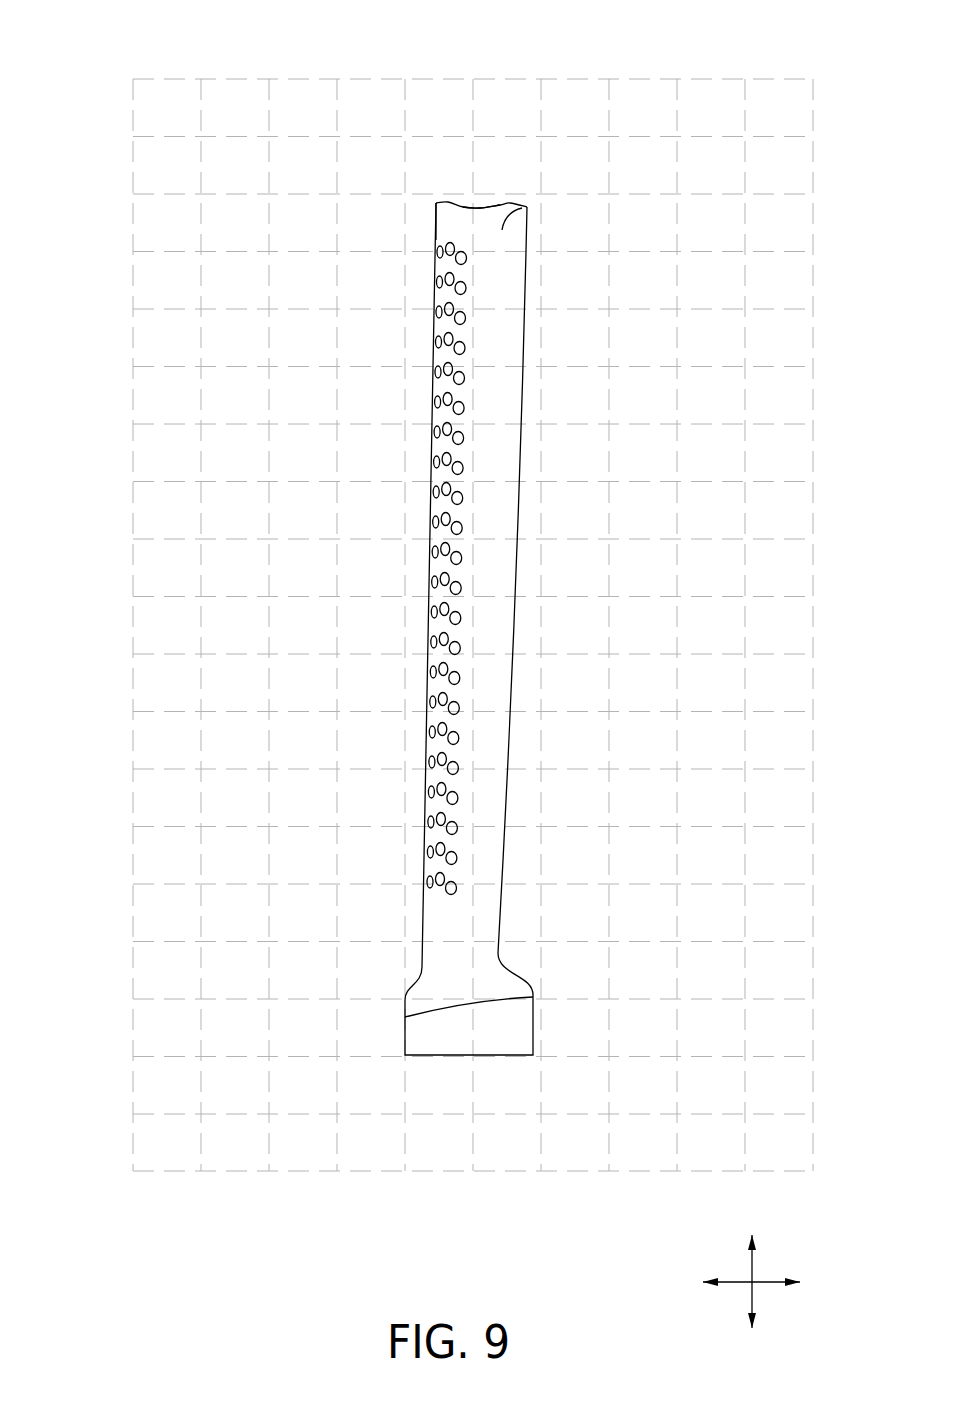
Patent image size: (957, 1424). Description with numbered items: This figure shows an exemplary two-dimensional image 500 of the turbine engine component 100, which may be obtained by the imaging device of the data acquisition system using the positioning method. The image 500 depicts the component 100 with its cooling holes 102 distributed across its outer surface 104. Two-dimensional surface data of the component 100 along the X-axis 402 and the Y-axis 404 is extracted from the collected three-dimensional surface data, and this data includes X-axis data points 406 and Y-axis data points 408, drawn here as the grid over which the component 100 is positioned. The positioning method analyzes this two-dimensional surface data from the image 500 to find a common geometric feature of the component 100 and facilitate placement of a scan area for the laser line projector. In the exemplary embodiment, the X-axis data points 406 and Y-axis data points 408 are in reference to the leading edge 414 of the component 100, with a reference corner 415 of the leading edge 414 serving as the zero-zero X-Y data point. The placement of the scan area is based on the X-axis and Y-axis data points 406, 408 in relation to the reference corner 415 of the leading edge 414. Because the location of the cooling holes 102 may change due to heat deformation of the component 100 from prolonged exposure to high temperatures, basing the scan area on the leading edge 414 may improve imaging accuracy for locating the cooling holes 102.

The component 100 is at (478, 324).
The cooling holes 102 is at (468, 405).
The outer surface 104 is at (527, 207).
The leading edge 414 is at (480, 208).
The reference corner 415 is at (437, 203).
The X-axis 402 is at (762, 1285).
The Y-axis 404 is at (752, 1265).
The X-axis data points 406 is at (270, 1170).
The Y-axis data points 408 is at (133, 998).
The two-dimensional image 500 is at (768, 63).